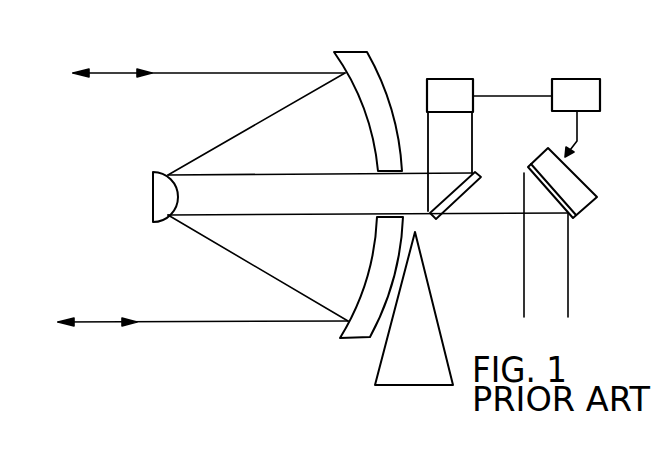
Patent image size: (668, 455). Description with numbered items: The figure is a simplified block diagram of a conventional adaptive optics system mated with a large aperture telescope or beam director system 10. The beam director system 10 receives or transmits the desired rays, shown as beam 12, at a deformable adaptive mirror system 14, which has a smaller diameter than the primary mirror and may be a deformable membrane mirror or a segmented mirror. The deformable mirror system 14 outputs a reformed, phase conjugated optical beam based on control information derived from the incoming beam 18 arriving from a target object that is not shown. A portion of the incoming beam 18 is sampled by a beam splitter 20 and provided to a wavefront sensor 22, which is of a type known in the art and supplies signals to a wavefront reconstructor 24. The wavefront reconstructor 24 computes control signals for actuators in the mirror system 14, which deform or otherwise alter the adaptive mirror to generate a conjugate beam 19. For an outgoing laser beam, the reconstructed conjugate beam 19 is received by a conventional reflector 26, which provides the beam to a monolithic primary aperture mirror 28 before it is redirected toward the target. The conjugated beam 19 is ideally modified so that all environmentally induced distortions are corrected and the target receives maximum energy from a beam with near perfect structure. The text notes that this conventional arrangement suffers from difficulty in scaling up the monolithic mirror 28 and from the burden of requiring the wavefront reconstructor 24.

The beam director system 10 is at (399, 52).
The beam 12 is at (568, 277).
The deformable adaptive mirror system 14 is at (587, 199).
The incoming beam 18 is at (476, 137).
The conjugate beam 19 is at (306, 218).
The beam splitter 20 is at (429, 221).
The wavefront sensor 22 is at (452, 79).
The wavefront reconstructor 24 is at (575, 79).
The reflector 26 is at (153, 185).
The monolithic primary aperture mirror 28 is at (366, 118).